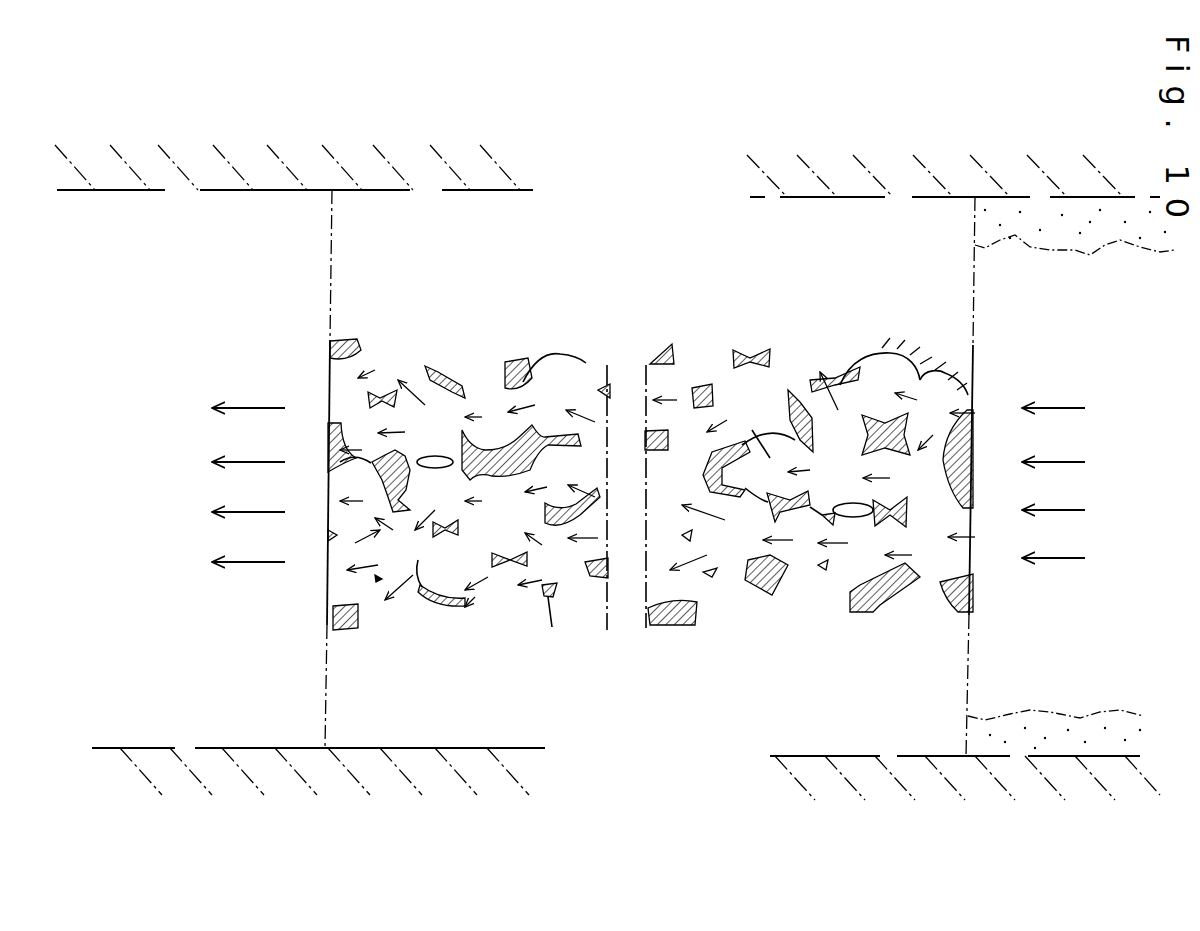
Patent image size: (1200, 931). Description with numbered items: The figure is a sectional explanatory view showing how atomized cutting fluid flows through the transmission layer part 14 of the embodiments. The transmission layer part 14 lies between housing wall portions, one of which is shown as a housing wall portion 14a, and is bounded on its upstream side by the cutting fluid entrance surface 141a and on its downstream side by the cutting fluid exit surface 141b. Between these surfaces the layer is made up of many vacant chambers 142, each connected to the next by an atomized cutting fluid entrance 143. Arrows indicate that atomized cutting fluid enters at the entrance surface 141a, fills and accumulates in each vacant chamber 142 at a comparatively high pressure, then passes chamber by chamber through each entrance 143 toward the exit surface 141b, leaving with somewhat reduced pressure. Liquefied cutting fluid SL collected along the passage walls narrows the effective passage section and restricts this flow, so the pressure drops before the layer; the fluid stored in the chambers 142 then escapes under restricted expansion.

The transmission layer part 14 is at (448, 126).
The housing wall portion 14a is at (841, 227).
The cutting fluid entrance surface 141a is at (970, 484).
The cutting fluid exit surface 141b is at (330, 342).
The vacant chamber 142 is at (452, 370).
The atomized cutting fluid entrance 143 is at (508, 380).
The cutting fluid SL is at (1073, 250).